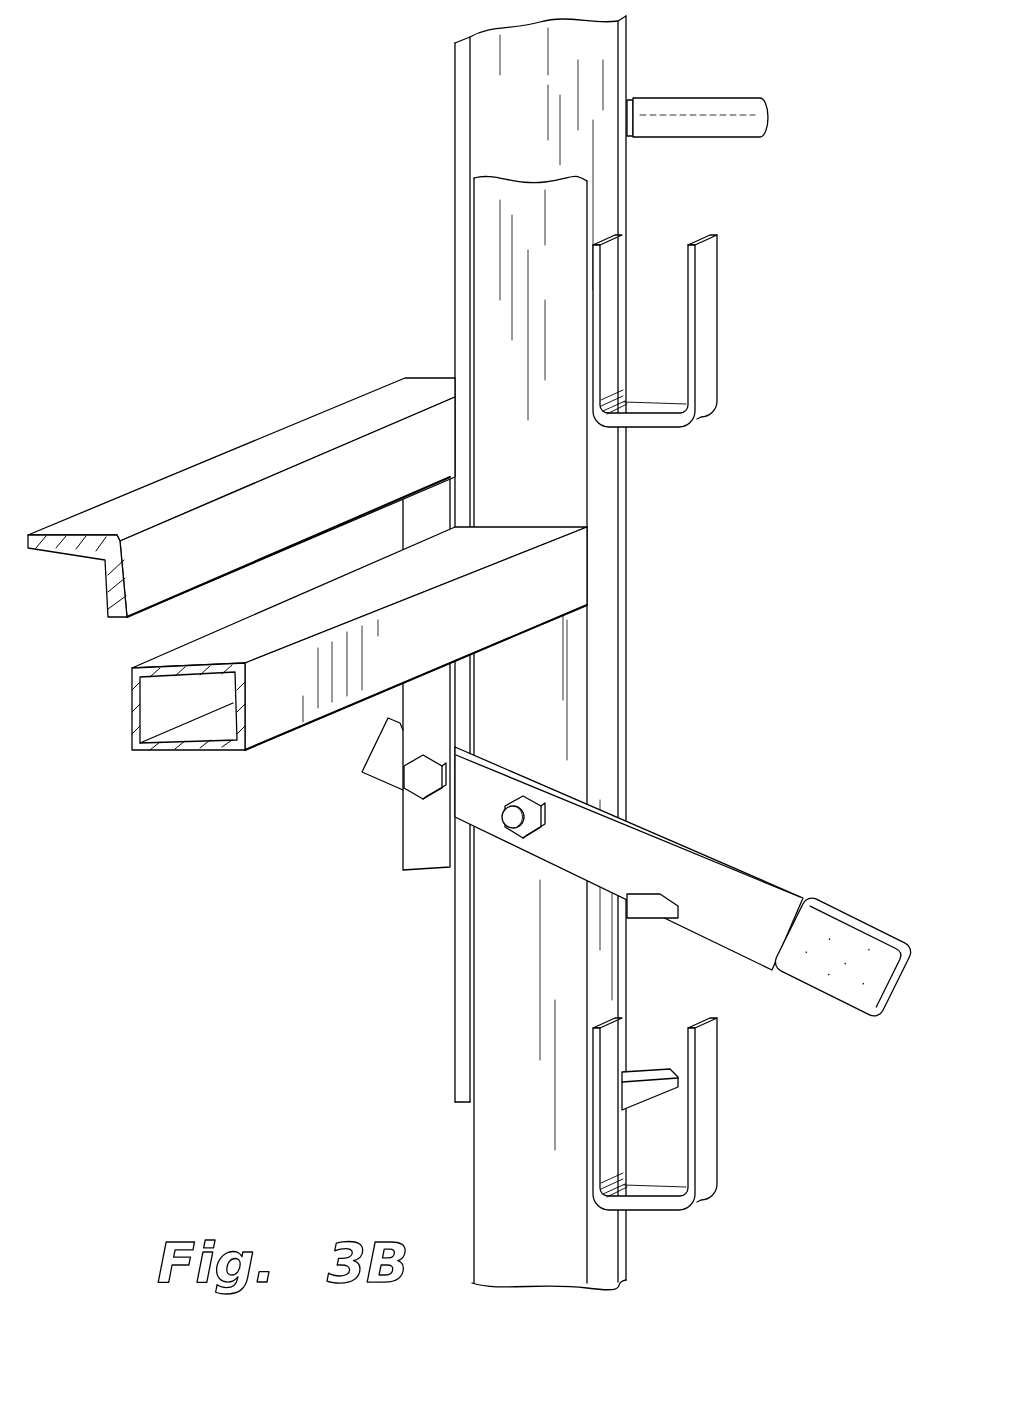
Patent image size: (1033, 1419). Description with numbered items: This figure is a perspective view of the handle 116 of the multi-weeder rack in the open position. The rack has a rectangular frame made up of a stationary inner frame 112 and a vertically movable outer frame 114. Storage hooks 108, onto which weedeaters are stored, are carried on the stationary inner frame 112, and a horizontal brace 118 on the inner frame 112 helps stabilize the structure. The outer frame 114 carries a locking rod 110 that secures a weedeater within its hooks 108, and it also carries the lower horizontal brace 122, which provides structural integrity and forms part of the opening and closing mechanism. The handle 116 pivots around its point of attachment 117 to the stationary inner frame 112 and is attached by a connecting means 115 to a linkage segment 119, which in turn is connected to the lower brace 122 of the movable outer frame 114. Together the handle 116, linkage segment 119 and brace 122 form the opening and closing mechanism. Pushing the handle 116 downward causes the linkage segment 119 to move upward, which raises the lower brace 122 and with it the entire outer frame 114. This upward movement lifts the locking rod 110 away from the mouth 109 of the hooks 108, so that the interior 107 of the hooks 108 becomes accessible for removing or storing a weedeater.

The vertically movable outer frame 114 is at (620, 62).
The locking rod 110 is at (772, 118).
The stationary inner frame 112 is at (607, 207).
The mouth of the hooks 109 is at (668, 239).
The storage hook 108 is at (705, 343).
The interior of the hooks 107 is at (660, 389).
The lower horizontal brace 122 is at (212, 478).
The linkage segment 119 is at (432, 712).
The horizontal brace 118 is at (272, 715).
The connecting means 115 is at (418, 782).
The point of attachment 117 is at (548, 817).
The handle 116 is at (857, 995).